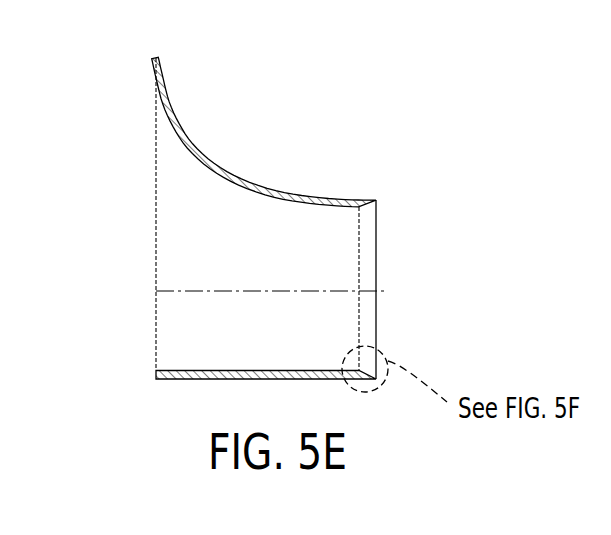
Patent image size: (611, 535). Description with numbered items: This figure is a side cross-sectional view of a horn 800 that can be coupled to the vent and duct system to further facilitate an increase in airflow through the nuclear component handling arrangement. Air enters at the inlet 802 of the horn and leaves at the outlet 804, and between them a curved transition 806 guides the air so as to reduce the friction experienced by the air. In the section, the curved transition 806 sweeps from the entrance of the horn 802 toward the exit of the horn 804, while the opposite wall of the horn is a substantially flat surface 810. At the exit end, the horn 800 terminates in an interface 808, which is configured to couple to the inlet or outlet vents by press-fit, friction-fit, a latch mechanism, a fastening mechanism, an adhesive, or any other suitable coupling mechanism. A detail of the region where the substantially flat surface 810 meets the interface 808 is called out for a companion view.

The horn 800 is at (279, 117).
The inlet 802 is at (112, 150).
The outlet 804 is at (432, 231).
The curved transition 806 is at (200, 150).
The interface 808 is at (364, 167).
The substantially flat surface 810 is at (171, 383).